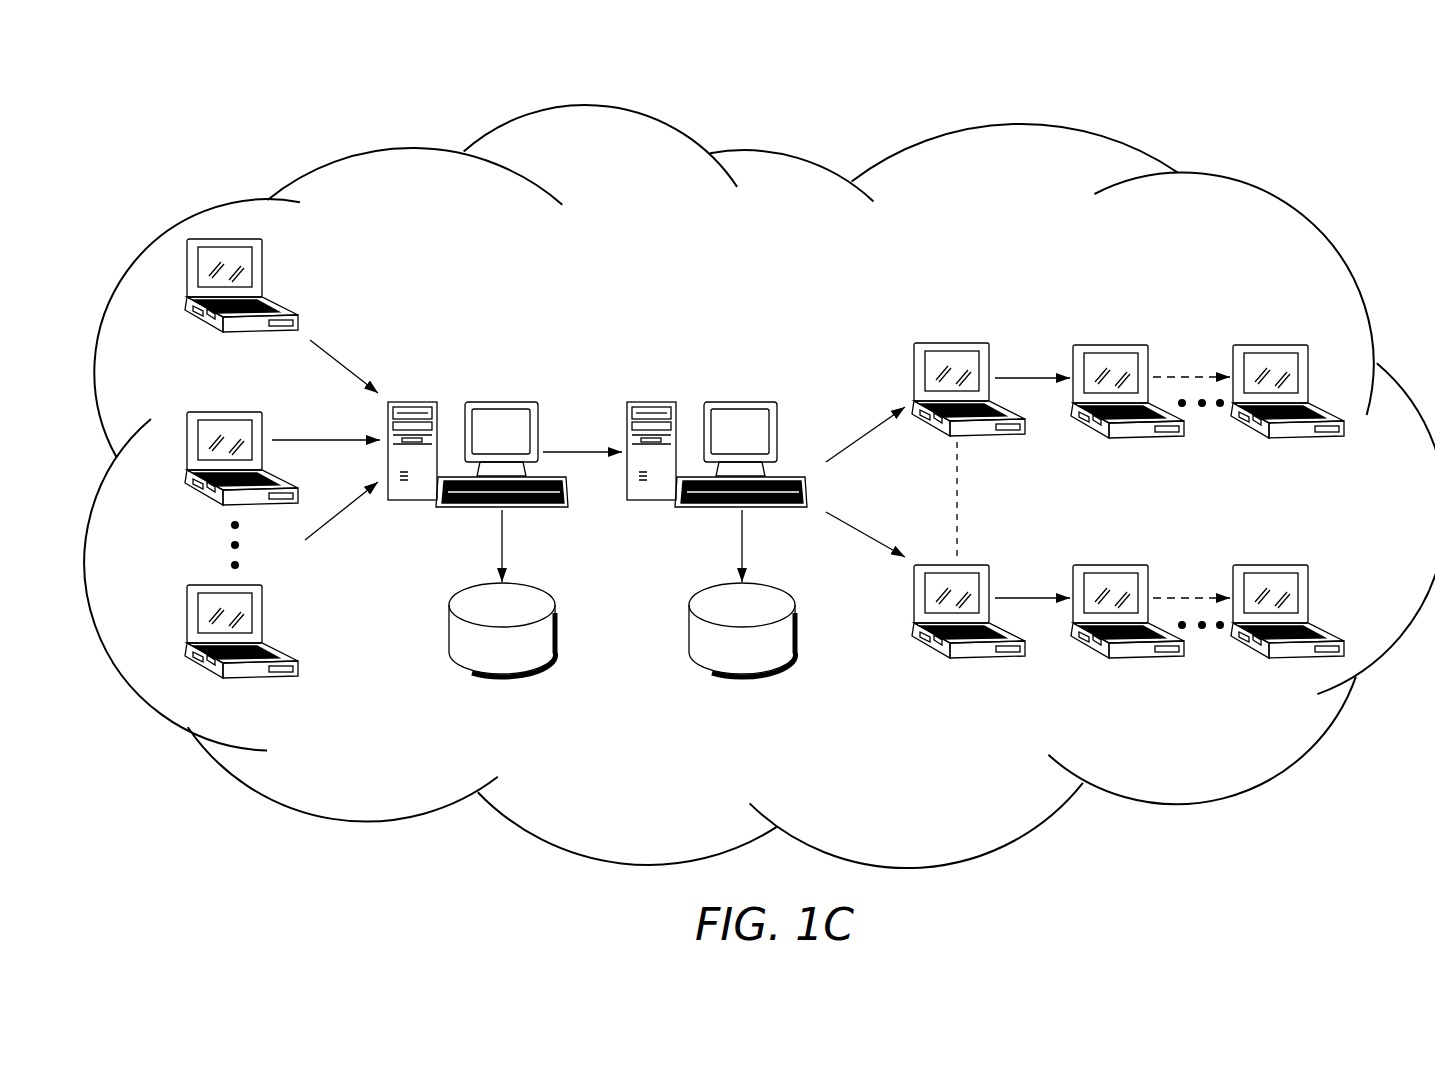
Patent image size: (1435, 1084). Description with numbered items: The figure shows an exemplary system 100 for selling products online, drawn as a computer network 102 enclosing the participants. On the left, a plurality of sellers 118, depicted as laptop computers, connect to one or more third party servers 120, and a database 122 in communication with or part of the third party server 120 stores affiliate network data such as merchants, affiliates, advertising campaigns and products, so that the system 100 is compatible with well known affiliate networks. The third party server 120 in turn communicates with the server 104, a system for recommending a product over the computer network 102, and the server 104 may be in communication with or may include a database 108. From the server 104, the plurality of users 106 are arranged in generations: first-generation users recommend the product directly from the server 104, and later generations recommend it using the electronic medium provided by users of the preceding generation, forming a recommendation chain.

The system for selling products online 100 is at (1363, 108).
The computer network 102 is at (1240, 181).
The sellers 118 is at (256, 240).
The third party server 120 is at (505, 402).
The server 104 is at (744, 402).
The database 122 is at (557, 623).
The database 108 is at (797, 623).
The users 106 is at (1277, 565).